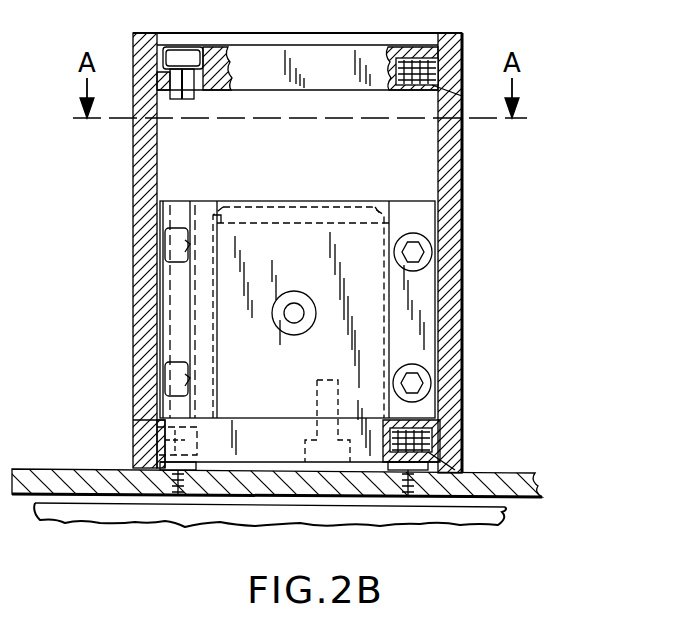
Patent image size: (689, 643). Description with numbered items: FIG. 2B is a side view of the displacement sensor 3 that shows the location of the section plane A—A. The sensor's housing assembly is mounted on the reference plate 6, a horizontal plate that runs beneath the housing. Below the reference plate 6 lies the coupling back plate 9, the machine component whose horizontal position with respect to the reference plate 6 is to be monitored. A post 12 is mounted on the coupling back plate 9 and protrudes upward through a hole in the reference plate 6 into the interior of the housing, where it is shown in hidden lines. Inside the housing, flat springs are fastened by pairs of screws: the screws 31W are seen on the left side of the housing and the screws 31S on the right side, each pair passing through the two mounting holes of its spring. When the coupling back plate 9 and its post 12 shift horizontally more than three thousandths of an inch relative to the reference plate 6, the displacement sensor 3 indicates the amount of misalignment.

The displacement sensor 3 is at (510, 153).
The post 12 is at (248, 201).
The screws 31W is at (166, 248).
The screws 31S is at (428, 270).
The reference plate 6 is at (530, 473).
The coupling back plate 9 is at (505, 515).